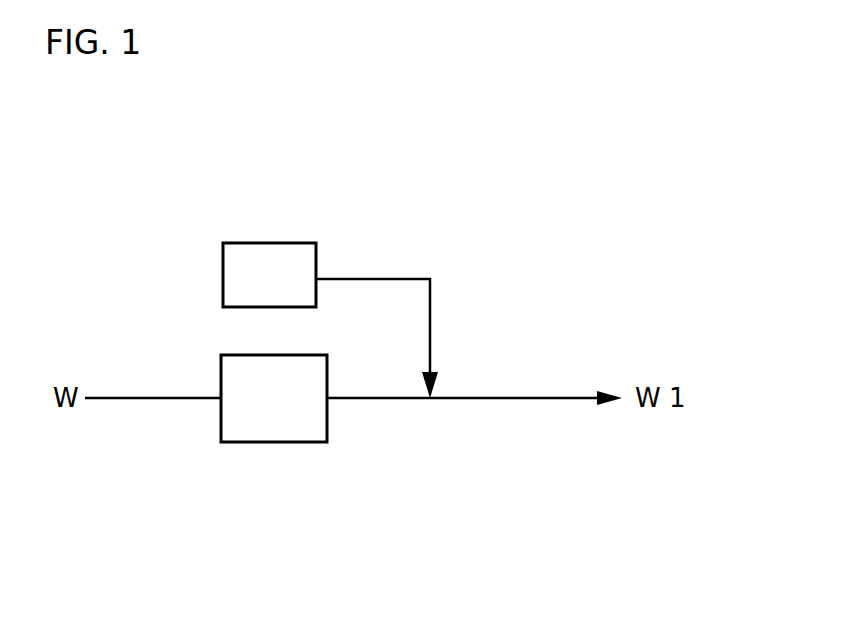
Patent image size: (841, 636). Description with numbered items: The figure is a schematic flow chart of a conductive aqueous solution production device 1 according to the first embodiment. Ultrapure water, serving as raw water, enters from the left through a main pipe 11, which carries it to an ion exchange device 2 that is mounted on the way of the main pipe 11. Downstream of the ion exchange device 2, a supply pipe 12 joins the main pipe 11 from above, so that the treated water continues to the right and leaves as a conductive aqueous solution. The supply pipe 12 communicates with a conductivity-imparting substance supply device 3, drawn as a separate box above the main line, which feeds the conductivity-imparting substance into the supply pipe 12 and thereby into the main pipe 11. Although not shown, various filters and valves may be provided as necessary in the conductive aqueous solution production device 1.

The conductive aqueous solution production device 1 is at (542, 296).
The ion exchange device 2 is at (273, 437).
The conductivity-imparting substance supply device 3 is at (268, 243).
The main pipe 11 is at (178, 399).
The supply pipe 12 is at (395, 279).